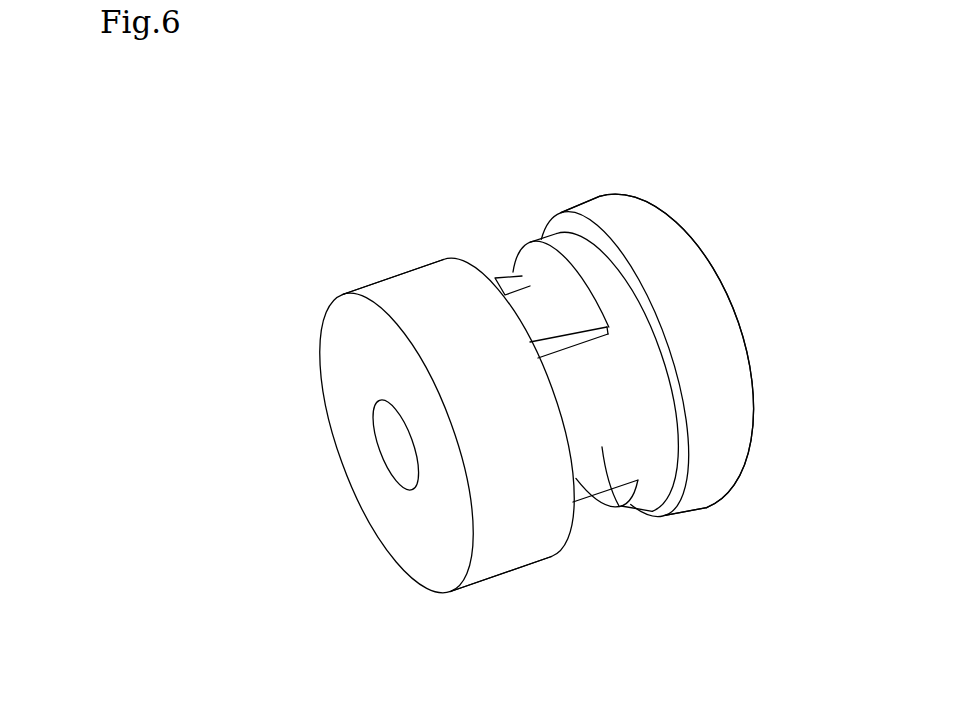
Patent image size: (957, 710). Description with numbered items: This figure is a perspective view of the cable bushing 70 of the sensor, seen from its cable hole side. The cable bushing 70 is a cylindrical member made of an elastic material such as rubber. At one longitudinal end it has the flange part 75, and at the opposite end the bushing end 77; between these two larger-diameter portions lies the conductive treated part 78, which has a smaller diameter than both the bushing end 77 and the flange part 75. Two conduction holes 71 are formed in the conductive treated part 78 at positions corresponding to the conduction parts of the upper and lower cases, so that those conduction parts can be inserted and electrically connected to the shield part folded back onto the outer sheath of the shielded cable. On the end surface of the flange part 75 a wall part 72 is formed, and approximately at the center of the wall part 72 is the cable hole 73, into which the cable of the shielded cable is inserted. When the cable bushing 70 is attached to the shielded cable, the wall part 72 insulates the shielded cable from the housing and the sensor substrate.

The cable bushing 70 is at (734, 187).
The conduction hole 71 is at (523, 305).
The wall part 72 is at (419, 554).
The cable hole 73 is at (388, 447).
The flange part 75 is at (511, 547).
The bushing end 77 is at (705, 478).
The conductive treated part 78 is at (623, 505).